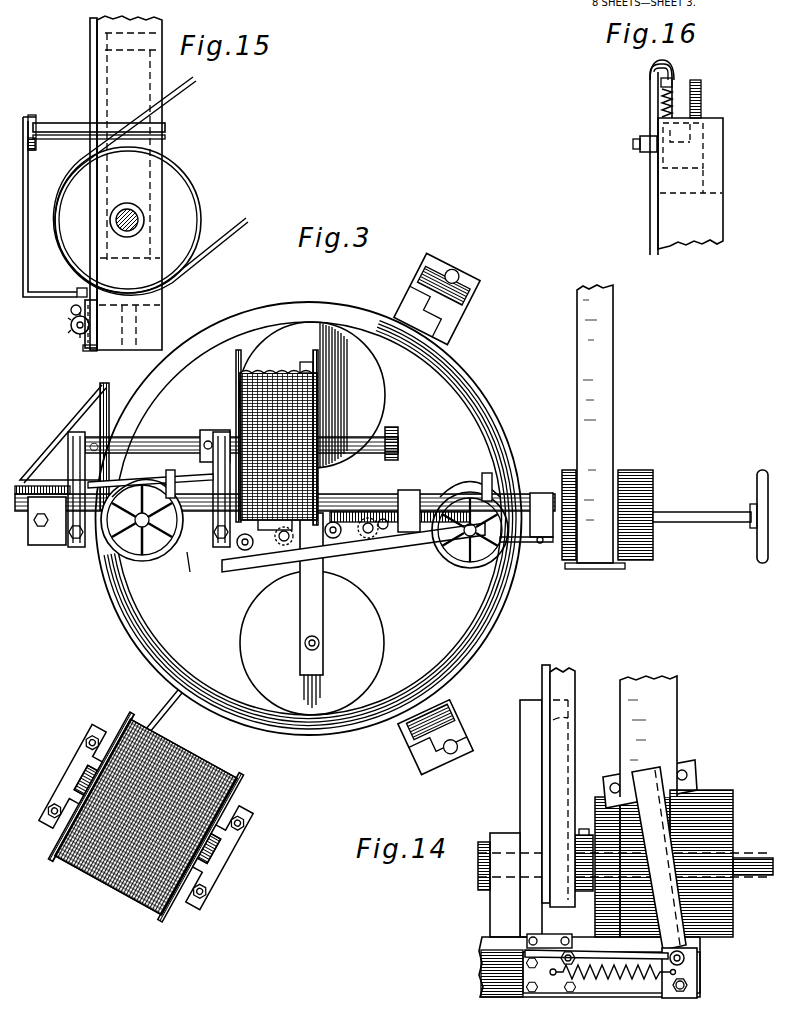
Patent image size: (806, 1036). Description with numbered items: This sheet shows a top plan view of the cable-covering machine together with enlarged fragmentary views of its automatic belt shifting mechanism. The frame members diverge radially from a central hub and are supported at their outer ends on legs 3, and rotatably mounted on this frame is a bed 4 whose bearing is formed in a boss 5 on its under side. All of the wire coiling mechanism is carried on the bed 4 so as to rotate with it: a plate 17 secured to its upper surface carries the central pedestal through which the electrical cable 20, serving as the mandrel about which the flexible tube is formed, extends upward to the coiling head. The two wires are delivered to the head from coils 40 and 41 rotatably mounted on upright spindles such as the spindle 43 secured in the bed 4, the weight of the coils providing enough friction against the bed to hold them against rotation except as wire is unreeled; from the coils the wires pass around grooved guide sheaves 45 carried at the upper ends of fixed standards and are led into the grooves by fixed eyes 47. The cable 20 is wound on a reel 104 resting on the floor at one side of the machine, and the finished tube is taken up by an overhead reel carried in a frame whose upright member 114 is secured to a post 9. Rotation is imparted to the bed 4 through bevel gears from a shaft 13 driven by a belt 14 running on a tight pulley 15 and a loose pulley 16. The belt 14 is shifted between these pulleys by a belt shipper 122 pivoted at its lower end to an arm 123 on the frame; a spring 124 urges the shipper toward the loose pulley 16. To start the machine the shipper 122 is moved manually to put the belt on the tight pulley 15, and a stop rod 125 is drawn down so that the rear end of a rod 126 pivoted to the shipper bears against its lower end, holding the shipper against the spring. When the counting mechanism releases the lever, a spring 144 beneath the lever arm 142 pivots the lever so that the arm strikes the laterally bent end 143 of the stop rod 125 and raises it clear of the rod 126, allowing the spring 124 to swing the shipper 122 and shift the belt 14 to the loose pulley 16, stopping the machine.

In FIG. 3, the legs 3 is at (447, 310).
In FIG. 3, the bed 4 is at (442, 432).
In FIG. 3, the boss 5 is at (40, 546).
In FIG. 14, the post 9 is at (528, 797).
In FIG. 15, the shaft 13 is at (143, 225).
In FIG. 3, the shaft 13 is at (717, 520).
In FIG. 14, the shaft 13 is at (750, 860).
In FIG. 15, the belt 14 is at (217, 257).
In FIG. 3, the belt 14 is at (600, 384).
In FIG. 14, the belt 14 is at (670, 713).
In FIG. 15, the tight pulley 15 is at (200, 213).
In FIG. 3, the tight pulley 15 is at (643, 470).
In FIG. 14, the tight pulley 15 is at (720, 791).
In FIG. 3, the loose pulley 16 is at (572, 470).
In FIG. 14, the loose pulley 16 is at (605, 790).
In FIG. 3, the plate 17 is at (263, 563).
In FIG. 3, the electrical cable 20 is at (168, 710).
In FIG. 3, the coil 40 is at (337, 357).
In FIG. 3, the coil 41 is at (363, 640).
In FIG. 3, the spindle 43 is at (322, 644).
In FIG. 3, the grooved guide sheave 45 is at (138, 552).
In FIG. 3, the fixed eye 47 is at (168, 474).
In FIG. 3, the reel 104 is at (117, 883).
In FIG. 15, the upright member 114 is at (157, 78).
In FIG. 16, the upright member 114 is at (670, 222).
In FIG. 14, the upright member 114 is at (577, 680).
In FIG. 15, the belt shipper 122 is at (25, 267).
In FIG. 14, the belt shipper 122 is at (653, 832).
In FIG. 15, the arm 123 is at (87, 348).
In FIG. 14, the arm 123 is at (633, 985).
In FIG. 15, the spring 124 is at (93, 328).
In FIG. 14, the spring 124 is at (603, 965).
In FIG. 15, the stop rod 125 is at (91, 64).
In FIG. 16, the stop rod 125 is at (652, 170).
In FIG. 14, the stop rod 125 is at (548, 738).
In FIG. 15, the rod 126 is at (87, 308).
In FIG. 14, the rod 126 is at (672, 962).
In FIG. 16, the lever arm 142 is at (665, 92).
In FIG. 16, the laterally bent end 143 is at (652, 70).
In FIG. 16, the spring 144 is at (662, 112).